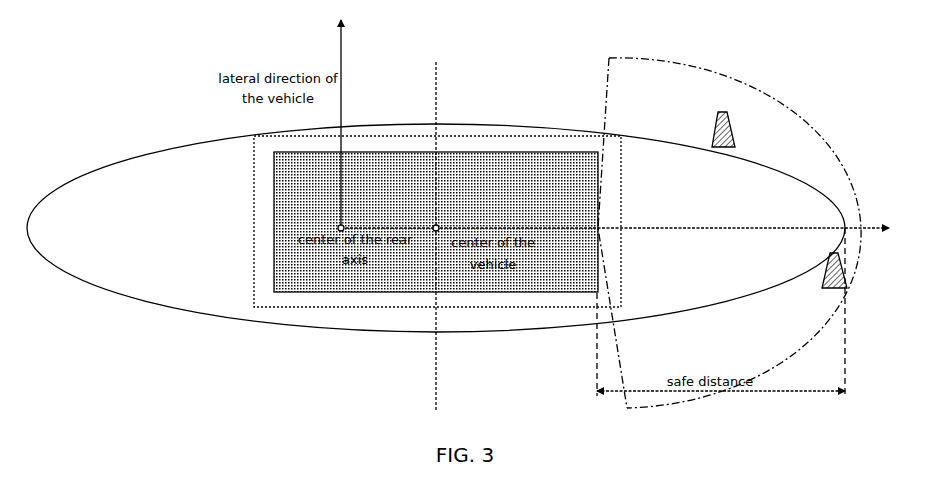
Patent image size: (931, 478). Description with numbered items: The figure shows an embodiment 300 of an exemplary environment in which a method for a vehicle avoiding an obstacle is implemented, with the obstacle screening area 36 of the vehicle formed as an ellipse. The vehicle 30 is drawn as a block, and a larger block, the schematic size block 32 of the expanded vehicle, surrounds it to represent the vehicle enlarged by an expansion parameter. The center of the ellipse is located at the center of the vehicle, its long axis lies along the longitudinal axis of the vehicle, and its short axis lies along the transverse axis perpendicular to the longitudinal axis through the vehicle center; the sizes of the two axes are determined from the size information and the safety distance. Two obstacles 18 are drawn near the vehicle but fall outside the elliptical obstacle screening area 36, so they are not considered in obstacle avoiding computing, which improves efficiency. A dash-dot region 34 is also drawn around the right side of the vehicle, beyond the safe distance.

The embodiment 300 is at (182, 46).
The obstacle screening area 36 is at (160, 147).
The schematic size block of the expanded vehicle 32 is at (395, 135).
The vehicle 30 is at (478, 152).
The sensing region 34 is at (785, 112).
The obstacle 18 is at (728, 126).